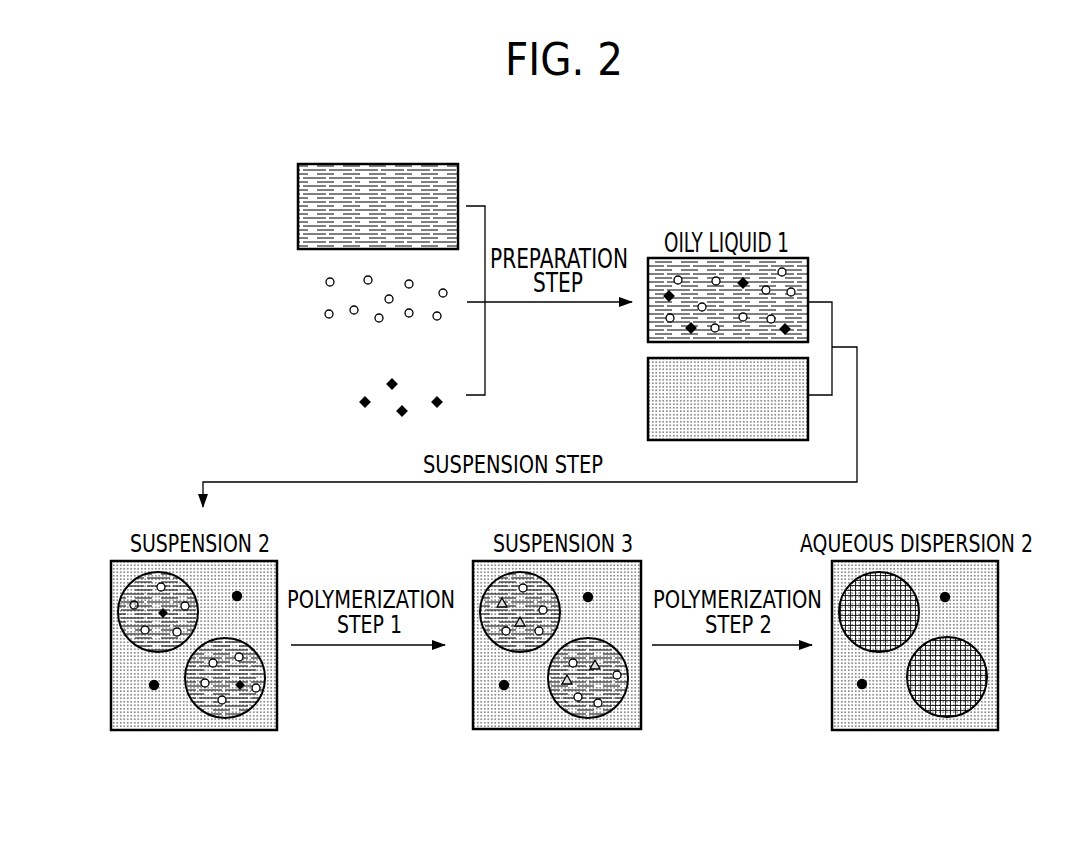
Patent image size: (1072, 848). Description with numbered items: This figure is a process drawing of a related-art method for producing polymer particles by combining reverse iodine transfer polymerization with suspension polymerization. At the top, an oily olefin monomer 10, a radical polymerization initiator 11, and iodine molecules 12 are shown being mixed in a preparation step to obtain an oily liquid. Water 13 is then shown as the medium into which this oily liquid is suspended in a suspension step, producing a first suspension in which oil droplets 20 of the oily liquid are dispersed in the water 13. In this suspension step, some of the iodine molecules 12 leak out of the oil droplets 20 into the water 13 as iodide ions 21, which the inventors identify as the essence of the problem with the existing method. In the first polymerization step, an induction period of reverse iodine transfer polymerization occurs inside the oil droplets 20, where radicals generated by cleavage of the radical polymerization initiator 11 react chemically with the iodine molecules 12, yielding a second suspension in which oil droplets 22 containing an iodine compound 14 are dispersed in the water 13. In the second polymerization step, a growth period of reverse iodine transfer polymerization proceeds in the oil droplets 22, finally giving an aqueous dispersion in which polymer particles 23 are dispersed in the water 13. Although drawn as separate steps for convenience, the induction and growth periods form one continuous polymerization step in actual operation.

The oily olefin monomer 10 is at (294, 162).
The radical polymerization initiator 11 is at (318, 273).
The iodine molecules 12 is at (346, 368).
The water 13 is at (643, 355).
The iodine compound 14 is at (499, 603).
The oil droplets 20 is at (266, 638).
The iodide ions 21 is at (241, 596).
The oil droplets containing iodine compound 22 is at (559, 635).
The polymer particles 23 is at (986, 638).